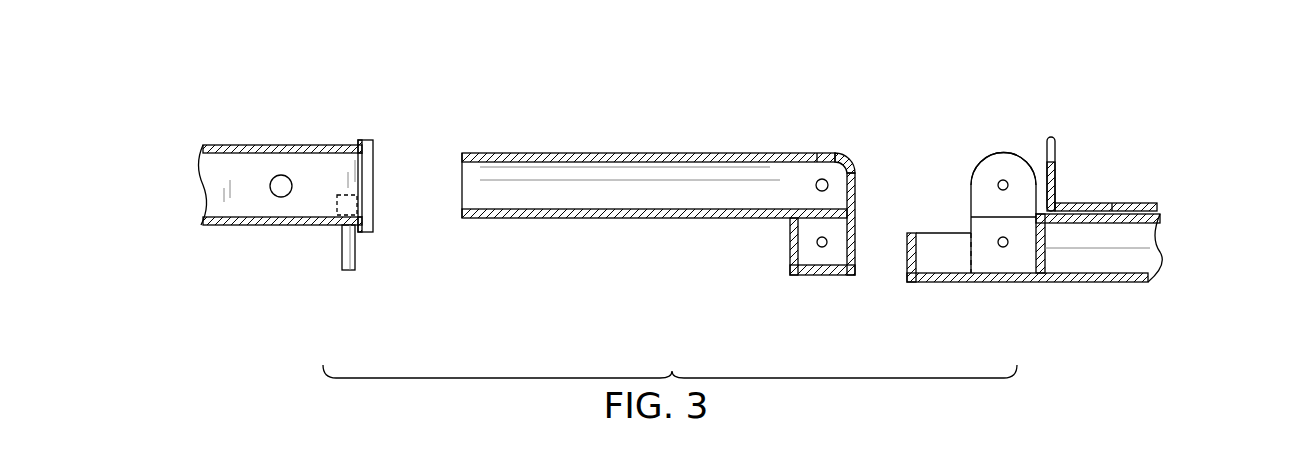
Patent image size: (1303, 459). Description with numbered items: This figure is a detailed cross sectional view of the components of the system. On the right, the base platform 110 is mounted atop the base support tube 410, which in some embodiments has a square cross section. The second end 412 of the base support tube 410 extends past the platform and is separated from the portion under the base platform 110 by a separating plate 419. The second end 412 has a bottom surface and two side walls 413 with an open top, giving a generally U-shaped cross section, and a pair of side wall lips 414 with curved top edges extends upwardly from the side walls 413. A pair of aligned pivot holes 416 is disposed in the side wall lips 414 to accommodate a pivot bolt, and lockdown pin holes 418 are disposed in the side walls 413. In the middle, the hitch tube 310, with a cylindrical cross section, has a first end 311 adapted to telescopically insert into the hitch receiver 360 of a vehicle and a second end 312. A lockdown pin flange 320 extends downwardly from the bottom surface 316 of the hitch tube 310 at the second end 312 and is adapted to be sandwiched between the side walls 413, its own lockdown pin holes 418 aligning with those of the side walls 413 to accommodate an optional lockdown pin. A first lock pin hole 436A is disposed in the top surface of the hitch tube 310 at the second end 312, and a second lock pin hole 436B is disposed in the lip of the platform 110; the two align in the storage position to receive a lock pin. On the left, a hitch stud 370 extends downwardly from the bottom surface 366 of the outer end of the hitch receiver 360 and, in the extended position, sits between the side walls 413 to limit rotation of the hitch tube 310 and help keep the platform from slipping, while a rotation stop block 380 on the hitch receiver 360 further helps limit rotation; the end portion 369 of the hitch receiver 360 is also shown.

The hitch receiver 360 is at (280, 145).
The bottom surface of the outer end of the hitch receiver 366 is at (247, 225).
The end flange 369 is at (373, 167).
The hitch stud 370 is at (342, 242).
The rotation stop block 380 is at (353, 207).
The hitch tube 310 is at (586, 153).
The first end of the hitch tube 311 is at (462, 182).
The second end of the hitch tube 312 is at (855, 197).
The bottom surface of the hitch tube 316 is at (590, 218).
The lockdown pin flange 320 is at (790, 235).
The first lock pin hole 436A is at (817, 153).
The second lock pin hole 436B is at (1056, 172).
The pivot holes 416 is at (827, 177).
The lockdown pin holes 418 is at (822, 248).
The second end of the base support tube 412 is at (907, 247).
The side walls 413 is at (1017, 227).
The side wall lips 414 is at (1000, 157).
The separating plate 419 is at (1047, 273).
The base support tube 410 is at (1155, 238).
The base platform 110 is at (1137, 203).